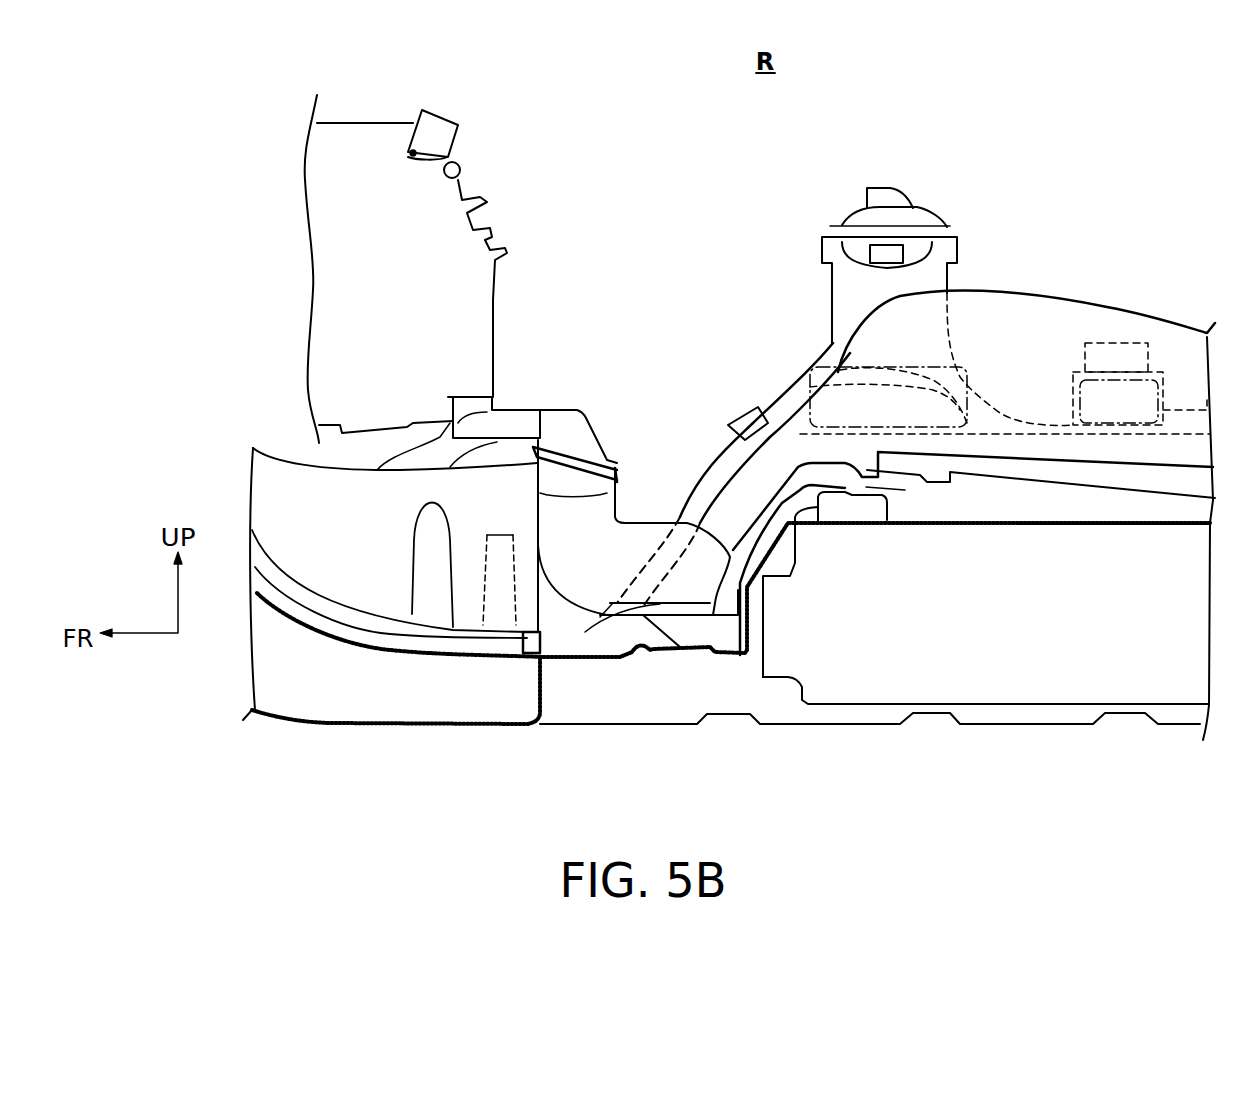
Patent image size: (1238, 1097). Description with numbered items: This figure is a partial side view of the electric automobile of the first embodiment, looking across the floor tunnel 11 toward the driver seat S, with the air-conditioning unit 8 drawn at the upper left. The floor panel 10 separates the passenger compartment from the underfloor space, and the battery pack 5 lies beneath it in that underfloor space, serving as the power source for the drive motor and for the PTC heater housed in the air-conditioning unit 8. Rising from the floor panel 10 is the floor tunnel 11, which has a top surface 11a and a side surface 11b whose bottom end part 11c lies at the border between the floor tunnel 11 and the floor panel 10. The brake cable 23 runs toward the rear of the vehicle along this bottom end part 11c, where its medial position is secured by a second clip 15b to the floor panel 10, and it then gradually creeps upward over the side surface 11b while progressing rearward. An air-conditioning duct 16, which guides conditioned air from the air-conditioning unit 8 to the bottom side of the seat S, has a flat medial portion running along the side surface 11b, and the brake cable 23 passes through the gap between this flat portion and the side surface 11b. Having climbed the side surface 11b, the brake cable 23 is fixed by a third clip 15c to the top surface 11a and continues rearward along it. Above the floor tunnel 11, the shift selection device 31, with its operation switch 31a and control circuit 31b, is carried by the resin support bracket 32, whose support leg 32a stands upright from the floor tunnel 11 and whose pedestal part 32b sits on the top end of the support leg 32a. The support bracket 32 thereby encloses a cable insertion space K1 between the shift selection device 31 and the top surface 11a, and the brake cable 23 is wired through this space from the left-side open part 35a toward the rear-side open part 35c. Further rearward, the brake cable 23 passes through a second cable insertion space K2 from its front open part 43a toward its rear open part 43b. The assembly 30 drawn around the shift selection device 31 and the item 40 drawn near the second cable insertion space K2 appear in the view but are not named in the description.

The battery pack 5 is at (925, 677).
The air-conditioning unit 8 is at (382, 148).
The floor panel 10 is at (634, 655).
The floor tunnel 11 is at (635, 474).
The top surface 11a is at (680, 457).
The side surface 11b is at (517, 493).
The bottom end part 11c is at (400, 650).
The second clip 15b is at (541, 660).
The third clip 15c is at (750, 413).
The air-conditioning duct 16 is at (687, 578).
The brake cable 23 is at (453, 637).
The fuel filler device 30 is at (829, 211).
The shift selection device 31 is at (843, 131).
The operation switch 31a is at (887, 197).
The control circuit 31b is at (897, 257).
The support bracket 32 is at (740, 247).
The support leg 32a is at (850, 278).
The pedestal part 32b is at (800, 381).
The left-side open part 35a is at (847, 408).
The rear-side open part 35c is at (967, 413).
The bracket 40 is at (1122, 341).
The front open part 43a is at (1073, 380).
The rear open part 43b is at (1163, 400).
The cable insertion space K1 is at (937, 427).
The second cable insertion space K2 is at (1123, 413).
The driver seat S is at (1037, 295).